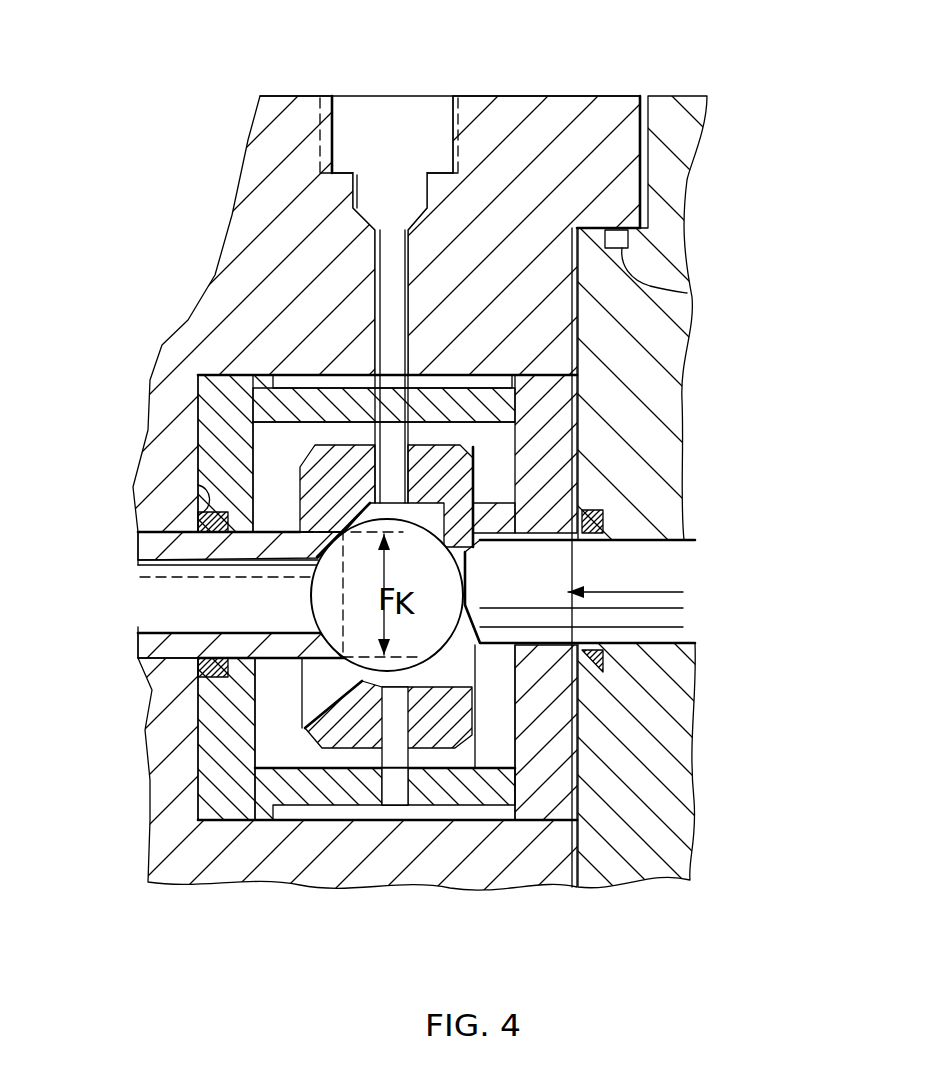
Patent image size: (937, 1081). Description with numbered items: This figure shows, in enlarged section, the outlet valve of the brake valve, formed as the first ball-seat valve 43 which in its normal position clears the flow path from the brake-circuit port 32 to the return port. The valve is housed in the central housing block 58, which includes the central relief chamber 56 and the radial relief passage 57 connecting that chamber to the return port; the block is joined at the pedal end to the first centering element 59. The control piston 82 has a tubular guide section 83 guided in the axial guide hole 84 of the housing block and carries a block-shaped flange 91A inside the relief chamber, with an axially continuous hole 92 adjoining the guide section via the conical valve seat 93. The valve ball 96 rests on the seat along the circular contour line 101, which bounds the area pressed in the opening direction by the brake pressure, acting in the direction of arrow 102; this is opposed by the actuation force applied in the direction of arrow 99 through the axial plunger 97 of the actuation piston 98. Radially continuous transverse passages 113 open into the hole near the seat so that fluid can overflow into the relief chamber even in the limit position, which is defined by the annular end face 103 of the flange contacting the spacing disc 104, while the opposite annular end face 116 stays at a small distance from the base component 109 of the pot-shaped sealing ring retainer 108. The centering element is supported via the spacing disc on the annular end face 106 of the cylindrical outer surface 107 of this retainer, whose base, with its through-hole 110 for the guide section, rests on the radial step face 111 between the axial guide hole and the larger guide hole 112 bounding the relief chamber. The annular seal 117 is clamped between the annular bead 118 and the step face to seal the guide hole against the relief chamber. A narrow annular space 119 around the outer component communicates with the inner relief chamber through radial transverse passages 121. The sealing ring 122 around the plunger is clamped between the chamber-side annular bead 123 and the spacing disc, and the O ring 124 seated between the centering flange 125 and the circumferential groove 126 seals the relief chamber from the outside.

The brake-circuit port 32 is at (432, 115).
The first ball-seat valve 43 is at (290, 610).
The central relief chamber 56 is at (240, 378).
The radial relief passage 57 is at (390, 257).
The central housing block 58 is at (294, 128).
The first centering element 59 is at (664, 830).
The control piston 82 is at (298, 705).
The tubular guide section 83 is at (163, 548).
The axial guide hole 84 is at (165, 690).
The block-shaped flange 91A is at (450, 468).
The axially continuous hole 92 is at (505, 482).
The conical valve seat 93 is at (312, 745).
The valve ball 96 is at (435, 630).
The axial plunger 97 is at (650, 560).
The actuation piston 98 is at (705, 628).
The arrow indicating direction of actuation force 99 is at (672, 578).
The circular contour line 101 is at (165, 578).
The arrow indicating direction of resulting pressure force 102 is at (165, 598).
The annular end face 103 is at (490, 772).
The spacing disc 104 is at (550, 787).
The annular end face 106 is at (490, 395).
The cylindrical outer surface 107 is at (440, 395).
The pot-shaped sealing ring retainer 108 is at (305, 382).
The base component 109 is at (223, 458).
The through-hole 110 is at (258, 735).
The radial step face 111 is at (198, 397).
The guide hole 112 is at (462, 850).
The radially continuous transverse passages 113 is at (373, 730).
The annular end face 116 is at (343, 670).
The annular seal 117 is at (200, 523).
The annular bead 118 is at (200, 480).
The narrow annular space 119 is at (340, 812).
The radial transverse passages 121 is at (397, 793).
The sealing ring 122 is at (593, 520).
The chamber-side annular bead 123 is at (600, 660).
The O ring 124 is at (632, 238).
The centering flange 125 is at (618, 175).
The circumferential groove 126 is at (687, 293).